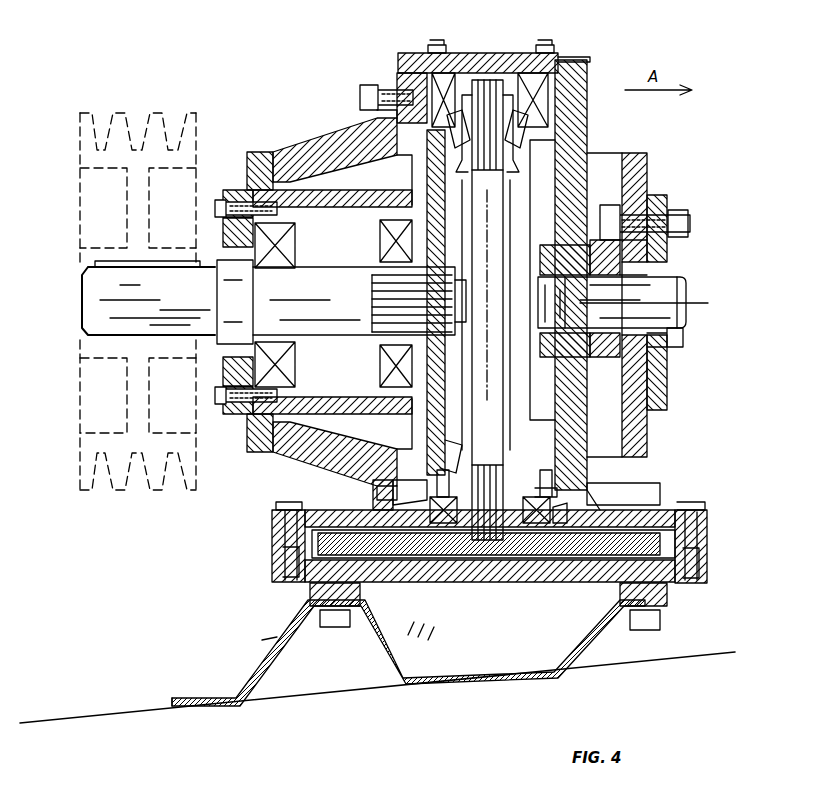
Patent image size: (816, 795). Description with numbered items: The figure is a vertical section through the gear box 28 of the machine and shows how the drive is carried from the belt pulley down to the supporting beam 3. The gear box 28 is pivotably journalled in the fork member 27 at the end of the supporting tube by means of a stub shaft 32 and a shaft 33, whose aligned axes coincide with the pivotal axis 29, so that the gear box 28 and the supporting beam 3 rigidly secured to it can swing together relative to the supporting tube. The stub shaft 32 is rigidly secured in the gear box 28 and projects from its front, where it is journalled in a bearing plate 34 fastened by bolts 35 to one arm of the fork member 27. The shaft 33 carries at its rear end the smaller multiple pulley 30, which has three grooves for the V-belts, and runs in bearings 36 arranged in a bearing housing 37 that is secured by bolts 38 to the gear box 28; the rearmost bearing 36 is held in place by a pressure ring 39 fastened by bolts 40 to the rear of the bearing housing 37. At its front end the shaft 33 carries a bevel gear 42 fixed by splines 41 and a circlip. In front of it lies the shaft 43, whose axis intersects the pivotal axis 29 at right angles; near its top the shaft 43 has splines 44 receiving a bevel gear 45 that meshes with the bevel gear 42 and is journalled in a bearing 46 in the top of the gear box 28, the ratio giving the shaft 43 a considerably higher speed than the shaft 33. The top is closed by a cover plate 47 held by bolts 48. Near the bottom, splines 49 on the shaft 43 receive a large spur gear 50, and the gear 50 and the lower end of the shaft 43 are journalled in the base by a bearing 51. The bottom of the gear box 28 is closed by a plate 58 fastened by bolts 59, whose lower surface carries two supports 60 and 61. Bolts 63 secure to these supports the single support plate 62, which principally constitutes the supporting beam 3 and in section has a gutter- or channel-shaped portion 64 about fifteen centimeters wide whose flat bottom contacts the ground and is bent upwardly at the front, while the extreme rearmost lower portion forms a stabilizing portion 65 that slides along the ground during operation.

The supporting beam 3 is at (262, 640).
The fork member 27 is at (612, 160).
The gear box 28 is at (305, 150).
The pivotal axis 29 is at (128, 305).
The multiple pulley 30 is at (160, 118).
The stub shaft 32 is at (660, 298).
The shaft 33 is at (118, 258).
The bearing plate 34 is at (668, 260).
The bolts 35 is at (690, 210).
The bearings 36 is at (375, 243).
The bearing housing 37 is at (350, 190).
The bolts 38 is at (360, 100).
The pressure ring 39 is at (247, 186).
The bolts 40 is at (215, 207).
The splines 41 is at (385, 297).
The bevel gear 42 is at (427, 180).
The shaft 43 is at (505, 250).
The splines 44 is at (478, 53).
The bevel gear 45 is at (530, 142).
The bearing 46 is at (568, 57).
The cover plate 47 is at (545, 40).
The bolts 48 is at (438, 40).
The splines 49 is at (500, 470).
The spur gear 50 is at (572, 558).
The bearing 51 is at (548, 470).
The plate 58 is at (272, 565).
The bolts 59 is at (296, 502).
The support 60 is at (308, 600).
The support 61 is at (668, 600).
The support plate 62 is at (598, 659).
The bolts 63 is at (650, 632).
The channel-section portion 64 is at (488, 674).
The stabilizing portion 65 is at (228, 690).